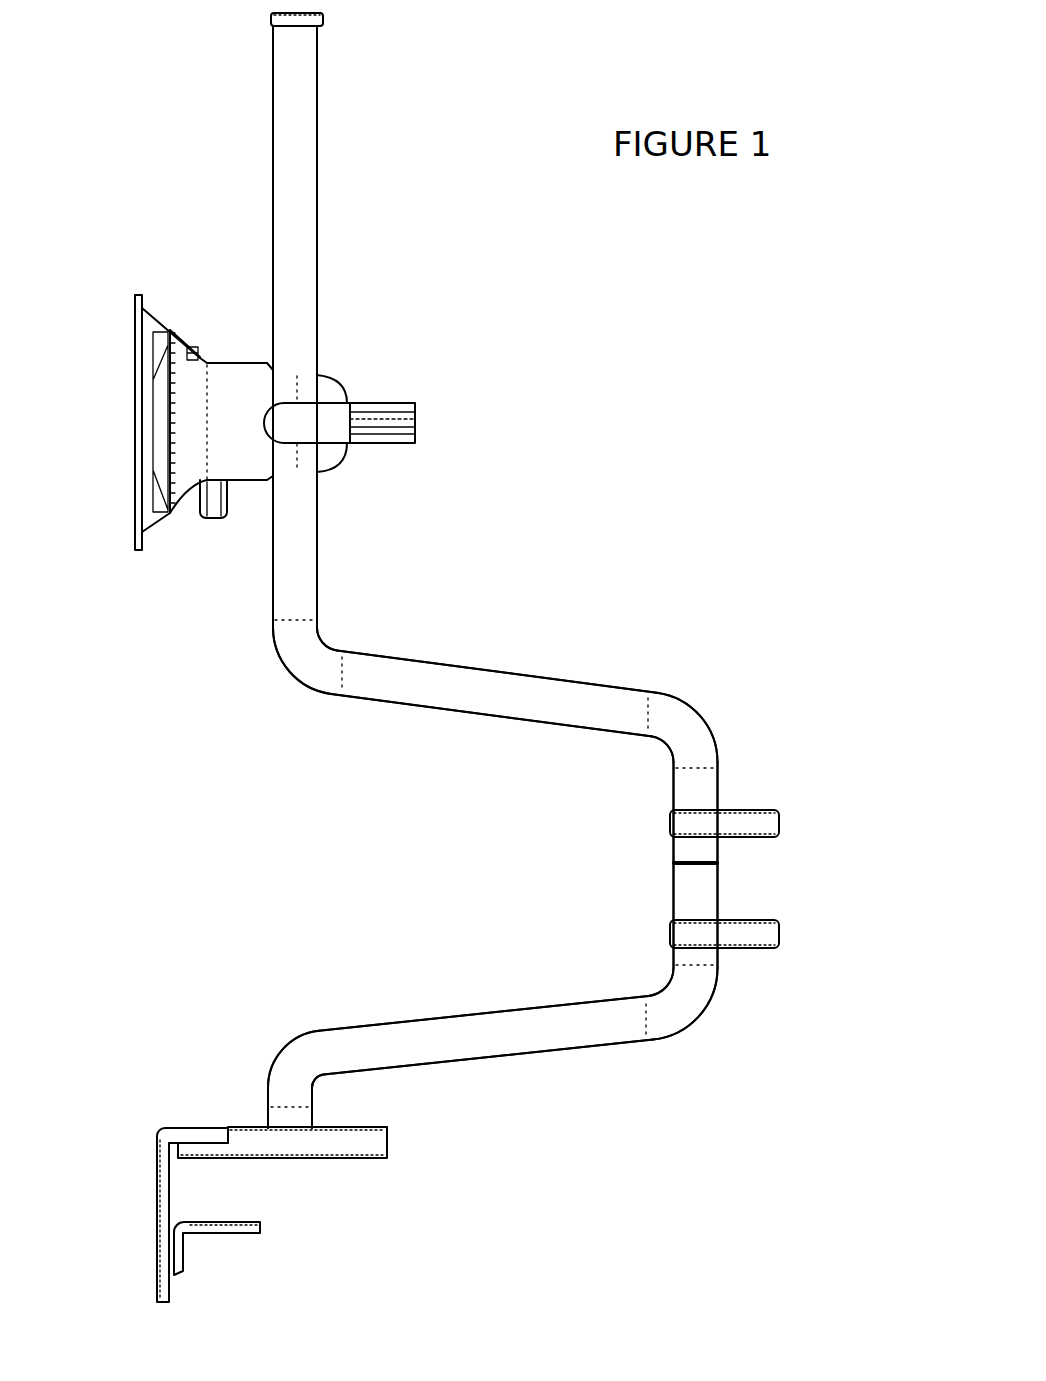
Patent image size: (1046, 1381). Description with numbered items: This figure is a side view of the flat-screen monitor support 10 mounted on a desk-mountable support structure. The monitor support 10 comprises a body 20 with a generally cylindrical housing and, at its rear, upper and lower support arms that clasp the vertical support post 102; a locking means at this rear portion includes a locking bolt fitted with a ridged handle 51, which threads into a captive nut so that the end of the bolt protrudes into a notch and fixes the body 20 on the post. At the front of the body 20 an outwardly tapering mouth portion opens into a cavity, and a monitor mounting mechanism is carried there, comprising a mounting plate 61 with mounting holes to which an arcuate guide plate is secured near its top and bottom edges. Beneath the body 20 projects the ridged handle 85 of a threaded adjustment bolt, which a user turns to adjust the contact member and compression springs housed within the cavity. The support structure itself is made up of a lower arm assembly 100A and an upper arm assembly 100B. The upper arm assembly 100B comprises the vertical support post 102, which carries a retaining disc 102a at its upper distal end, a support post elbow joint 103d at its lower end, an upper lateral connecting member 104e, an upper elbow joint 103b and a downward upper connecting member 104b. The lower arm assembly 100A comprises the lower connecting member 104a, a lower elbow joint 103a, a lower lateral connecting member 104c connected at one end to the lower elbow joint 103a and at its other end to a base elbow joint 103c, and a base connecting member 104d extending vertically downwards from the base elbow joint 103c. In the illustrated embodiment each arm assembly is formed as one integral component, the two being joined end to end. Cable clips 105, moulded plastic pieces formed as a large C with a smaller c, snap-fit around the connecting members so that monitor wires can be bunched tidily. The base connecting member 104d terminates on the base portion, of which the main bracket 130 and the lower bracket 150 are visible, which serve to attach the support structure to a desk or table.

The flat-screen monitor support 10 is at (214, 305).
The body 20 is at (243, 484).
The ridged handle 51 is at (415, 418).
The mounting plate 61 is at (137, 298).
The ridged handle 85 is at (212, 520).
The lower arm assembly 100A is at (501, 1008).
The upper arm assembly 100B is at (579, 676).
The vertical support post 102 is at (312, 104).
The retaining disc 102a is at (323, 19).
The lower elbow joint 103a is at (690, 1002).
The upper elbow joint 103b is at (690, 722).
The base elbow joint 103c is at (306, 1062).
The support post elbow joint 103d is at (300, 653).
The lower connecting member 104a is at (703, 883).
The upper connecting member 104b is at (703, 785).
The lower lateral connecting member 104c is at (550, 1045).
The base connecting member 104d is at (285, 1118).
The upper lateral connecting member 104e is at (478, 702).
The cable clip 105 is at (768, 824).
The main bracket 130 is at (152, 1133).
The lower bracket 150 is at (191, 1238).